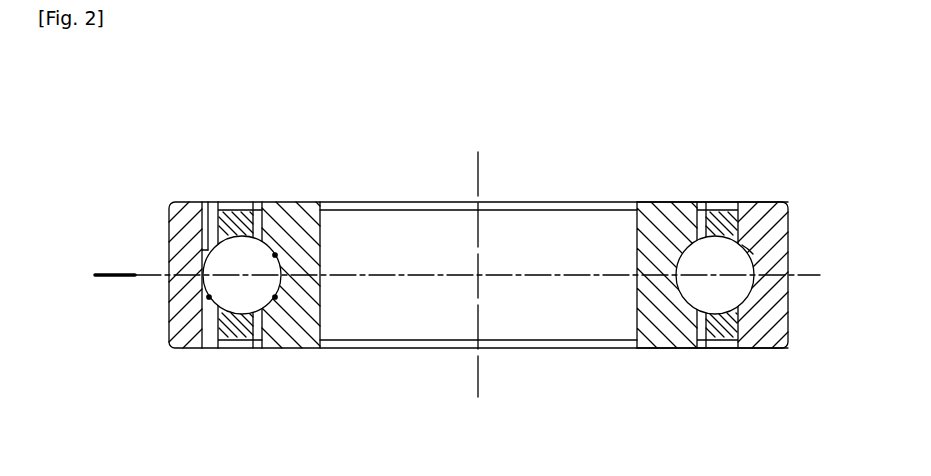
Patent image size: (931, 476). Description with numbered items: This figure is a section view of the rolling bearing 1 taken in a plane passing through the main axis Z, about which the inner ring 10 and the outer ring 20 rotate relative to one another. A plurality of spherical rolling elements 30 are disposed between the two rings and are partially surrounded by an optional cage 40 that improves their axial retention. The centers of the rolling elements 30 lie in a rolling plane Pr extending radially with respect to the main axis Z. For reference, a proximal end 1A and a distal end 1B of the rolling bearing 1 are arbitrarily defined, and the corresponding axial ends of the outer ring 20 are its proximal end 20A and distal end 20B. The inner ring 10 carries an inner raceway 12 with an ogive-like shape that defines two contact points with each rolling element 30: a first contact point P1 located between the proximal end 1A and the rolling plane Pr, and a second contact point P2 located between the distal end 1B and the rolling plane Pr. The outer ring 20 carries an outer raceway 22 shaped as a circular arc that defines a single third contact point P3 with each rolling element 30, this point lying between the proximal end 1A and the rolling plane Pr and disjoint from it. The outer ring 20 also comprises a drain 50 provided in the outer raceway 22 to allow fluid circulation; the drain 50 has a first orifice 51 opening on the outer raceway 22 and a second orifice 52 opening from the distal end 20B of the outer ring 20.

The rolling bearing 1 is at (776, 149).
The proximal end 1A is at (277, 356).
The distal end 1B is at (276, 196).
The inner ring 10 is at (651, 212).
The inner raceway 12 is at (676, 271).
The outer ring 20 is at (759, 214).
The proximal end of the outer ring 20A is at (660, 349).
The distal end of the outer ring 20B is at (683, 215).
The outer raceway 22 is at (753, 254).
The rolling elements 30 is at (232, 293).
The cage 40 is at (723, 216).
The drain 50 is at (203, 222).
The first orifice 51 is at (209, 256).
The second orifice 52 is at (207, 201).
The first contact point P1 is at (276, 297).
The second contact point P2 is at (276, 255).
The third contact point P3 is at (209, 297).
The rolling plane Pr is at (112, 272).
The main axis Z is at (477, 276).